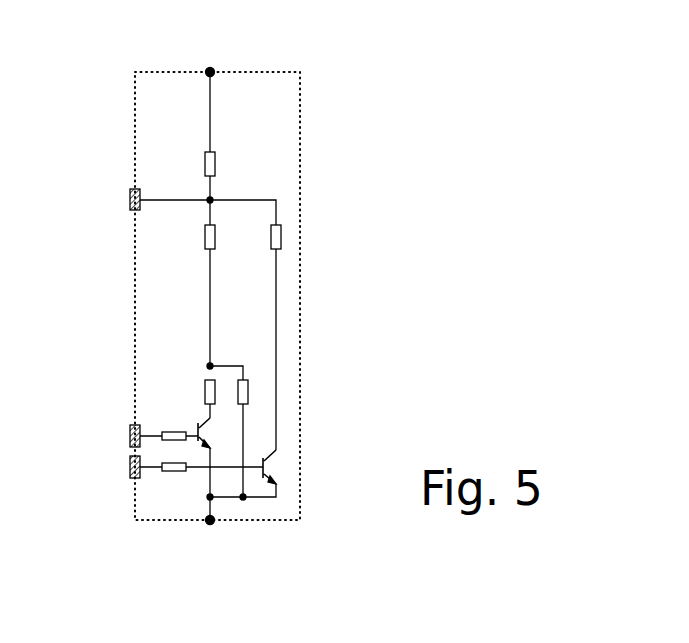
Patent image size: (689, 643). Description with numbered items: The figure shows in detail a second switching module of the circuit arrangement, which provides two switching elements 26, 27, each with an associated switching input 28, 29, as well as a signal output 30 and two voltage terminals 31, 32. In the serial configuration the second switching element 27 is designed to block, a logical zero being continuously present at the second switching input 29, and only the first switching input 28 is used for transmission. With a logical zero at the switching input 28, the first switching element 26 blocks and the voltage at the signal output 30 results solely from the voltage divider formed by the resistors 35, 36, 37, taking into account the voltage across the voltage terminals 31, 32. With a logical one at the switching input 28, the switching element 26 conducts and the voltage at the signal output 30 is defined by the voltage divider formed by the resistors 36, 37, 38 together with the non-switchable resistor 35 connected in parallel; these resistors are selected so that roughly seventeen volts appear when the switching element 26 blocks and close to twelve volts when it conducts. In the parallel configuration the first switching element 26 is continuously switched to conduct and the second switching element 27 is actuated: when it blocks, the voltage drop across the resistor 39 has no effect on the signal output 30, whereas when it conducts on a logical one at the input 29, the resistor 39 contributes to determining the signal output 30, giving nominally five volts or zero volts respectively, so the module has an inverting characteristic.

The first switching element 26 is at (192, 418).
The second switching element 27 is at (280, 465).
The first switching input 28 is at (120, 433).
The second switching input 29 is at (120, 470).
The signal output 30 is at (122, 192).
The voltage terminal 31 is at (210, 528).
The voltage terminal 32 is at (212, 66).
The non-switchable resistor 35 is at (254, 381).
The resistor 36 is at (229, 232).
The resistor 37 is at (193, 150).
The resistor 38 is at (197, 385).
The resistor 39 is at (284, 237).